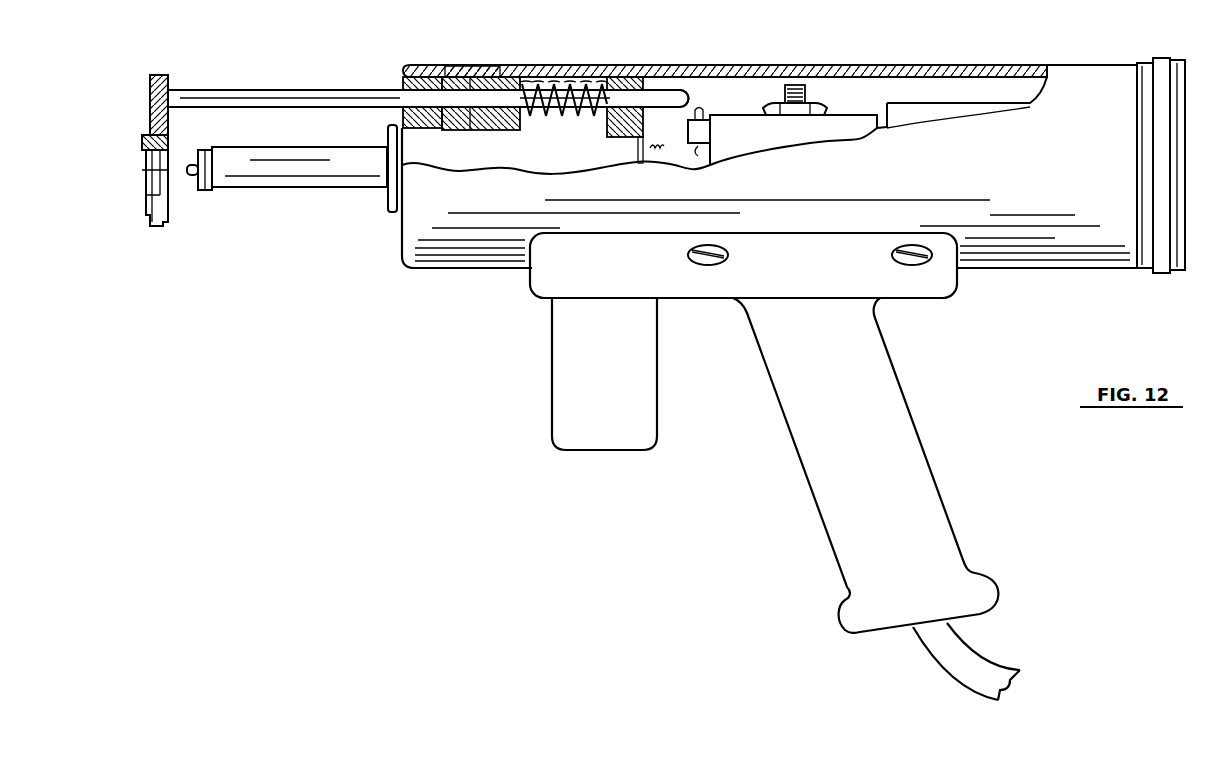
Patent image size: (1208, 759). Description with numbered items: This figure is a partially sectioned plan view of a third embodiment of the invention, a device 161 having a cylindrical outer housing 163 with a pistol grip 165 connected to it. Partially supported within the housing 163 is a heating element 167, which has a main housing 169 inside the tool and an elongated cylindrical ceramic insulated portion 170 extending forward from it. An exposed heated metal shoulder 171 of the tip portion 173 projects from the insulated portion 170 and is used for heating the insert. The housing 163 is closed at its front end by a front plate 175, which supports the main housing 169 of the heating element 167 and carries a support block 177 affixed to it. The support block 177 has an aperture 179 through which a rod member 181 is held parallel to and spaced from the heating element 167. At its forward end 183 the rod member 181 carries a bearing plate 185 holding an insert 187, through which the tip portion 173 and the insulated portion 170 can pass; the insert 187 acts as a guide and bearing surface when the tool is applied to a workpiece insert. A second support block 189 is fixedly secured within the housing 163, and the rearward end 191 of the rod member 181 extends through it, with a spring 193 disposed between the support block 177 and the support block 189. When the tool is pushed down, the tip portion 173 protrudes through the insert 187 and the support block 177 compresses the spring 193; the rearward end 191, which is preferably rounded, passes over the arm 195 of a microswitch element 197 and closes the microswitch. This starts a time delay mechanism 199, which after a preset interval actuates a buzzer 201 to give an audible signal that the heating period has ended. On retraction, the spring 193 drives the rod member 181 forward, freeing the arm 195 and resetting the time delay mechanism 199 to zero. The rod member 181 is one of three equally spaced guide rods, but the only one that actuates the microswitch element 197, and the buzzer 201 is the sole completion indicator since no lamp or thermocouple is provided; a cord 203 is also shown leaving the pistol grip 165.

The device 161 is at (846, 60).
The cylindrical outer housing 163 is at (670, 68).
The pistol grip 165 is at (875, 397).
The heating element 167 is at (388, 217).
The main housing 169 is at (452, 157).
The cylindrical ceramic insulated portion 170 is at (310, 170).
The heated metal shoulder 171 is at (203, 152).
The tip portion 173 is at (190, 177).
The front plate 175 is at (402, 82).
The support block 177 is at (490, 72).
The aperture 179 is at (472, 70).
The rod member 181 is at (257, 97).
The forward end 183 is at (168, 92).
The bearing plate 185 is at (150, 113).
The insert 187 is at (143, 139).
The support block 189 is at (630, 72).
The rearward end 191 is at (690, 88).
The spring 193 is at (540, 108).
The arm 195 is at (703, 108).
The microswitch element 197 is at (710, 128).
The time delay mechanism 199 is at (950, 107).
The buzzer 201 is at (628, 408).
The cord 203 is at (980, 662).